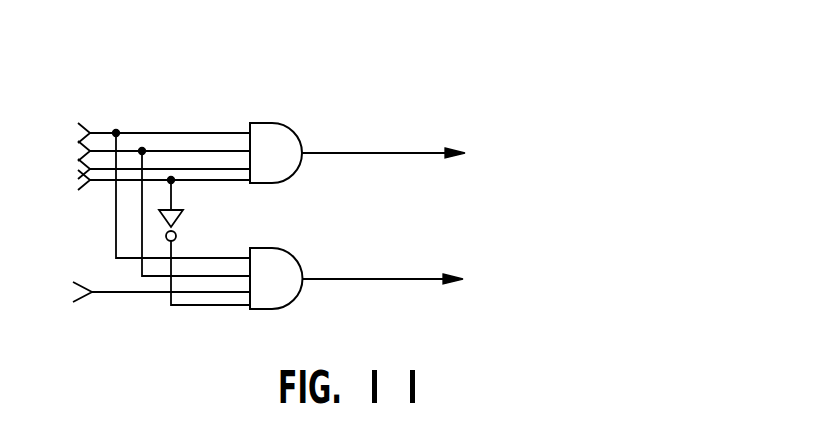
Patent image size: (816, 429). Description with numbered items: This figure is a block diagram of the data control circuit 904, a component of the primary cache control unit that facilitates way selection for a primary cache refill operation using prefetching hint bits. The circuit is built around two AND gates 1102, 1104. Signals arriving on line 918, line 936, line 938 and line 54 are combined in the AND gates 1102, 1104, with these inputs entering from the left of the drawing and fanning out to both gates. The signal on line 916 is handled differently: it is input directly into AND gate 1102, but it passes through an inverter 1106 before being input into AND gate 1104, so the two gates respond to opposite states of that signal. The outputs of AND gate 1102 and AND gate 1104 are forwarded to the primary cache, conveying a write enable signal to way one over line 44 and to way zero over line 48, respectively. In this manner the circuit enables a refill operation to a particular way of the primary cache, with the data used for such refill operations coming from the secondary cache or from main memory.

The data control circuit 904 is at (90, 63).
The line 54 is at (80, 141).
The line 938 is at (80, 166).
The line 916 is at (96, 186).
The line 918 is at (116, 132).
The line 936 is at (113, 294).
The AND gate 1102 is at (268, 123).
The AND gate 1104 is at (300, 294).
The inverter 1106 is at (182, 218).
The line 44 is at (400, 152).
The line 48 is at (380, 278).